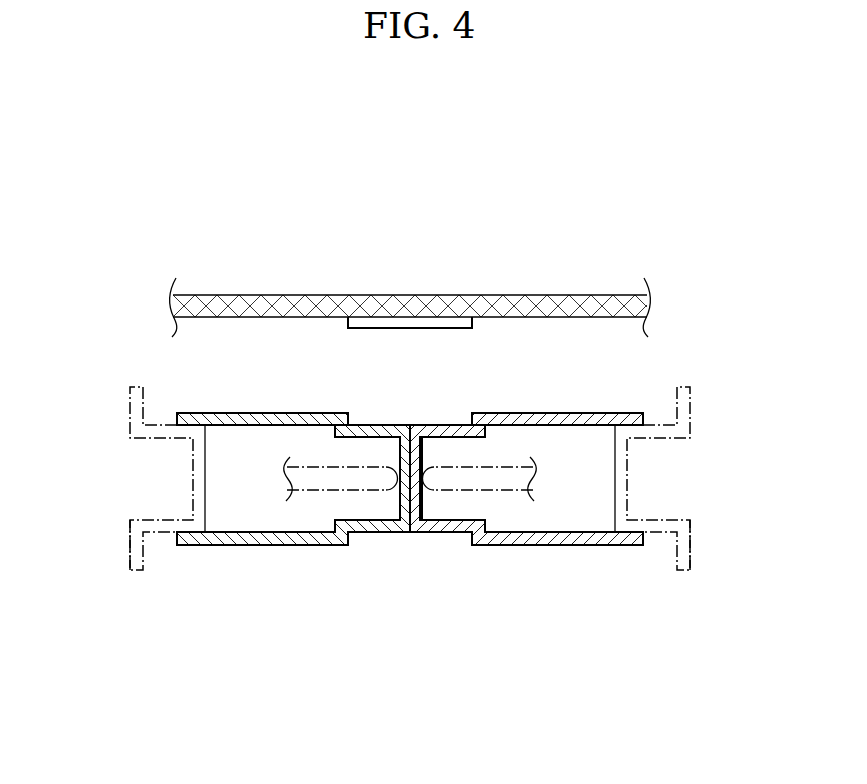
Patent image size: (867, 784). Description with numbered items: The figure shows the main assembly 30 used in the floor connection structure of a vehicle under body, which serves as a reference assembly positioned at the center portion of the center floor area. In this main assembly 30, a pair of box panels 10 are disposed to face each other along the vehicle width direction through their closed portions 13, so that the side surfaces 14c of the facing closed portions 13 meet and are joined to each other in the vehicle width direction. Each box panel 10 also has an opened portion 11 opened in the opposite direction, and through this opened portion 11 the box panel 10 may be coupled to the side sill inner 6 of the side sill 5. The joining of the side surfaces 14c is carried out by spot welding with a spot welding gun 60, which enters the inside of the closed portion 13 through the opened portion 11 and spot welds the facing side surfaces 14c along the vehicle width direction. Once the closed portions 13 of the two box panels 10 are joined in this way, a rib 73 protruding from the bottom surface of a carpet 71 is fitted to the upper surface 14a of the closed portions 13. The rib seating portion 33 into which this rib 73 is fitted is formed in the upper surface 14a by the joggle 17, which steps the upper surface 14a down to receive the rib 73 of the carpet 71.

The side sill 5 is at (115, 540).
The side sill inner 6 is at (193, 477).
The box panel 10 is at (277, 651).
The opened portion 11 is at (275, 552).
The closed portion 13 is at (375, 552).
The upper surface 14a is at (375, 424).
The side surface 14c is at (418, 458).
The joggle 17 is at (349, 415).
The main assembly 30 is at (416, 156).
The rib seating portion 33 is at (392, 411).
The spot welding gun 60 is at (308, 467).
The carpet 71 is at (480, 303).
The rib 73 is at (428, 325).